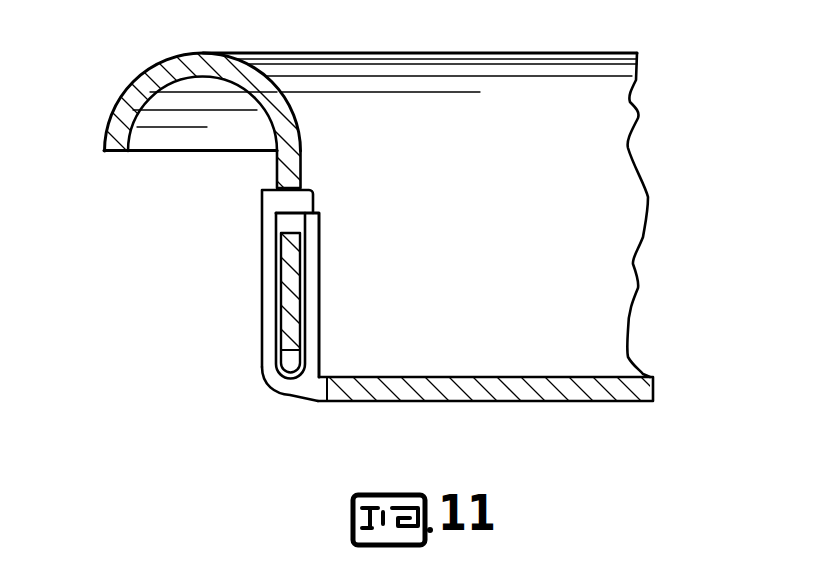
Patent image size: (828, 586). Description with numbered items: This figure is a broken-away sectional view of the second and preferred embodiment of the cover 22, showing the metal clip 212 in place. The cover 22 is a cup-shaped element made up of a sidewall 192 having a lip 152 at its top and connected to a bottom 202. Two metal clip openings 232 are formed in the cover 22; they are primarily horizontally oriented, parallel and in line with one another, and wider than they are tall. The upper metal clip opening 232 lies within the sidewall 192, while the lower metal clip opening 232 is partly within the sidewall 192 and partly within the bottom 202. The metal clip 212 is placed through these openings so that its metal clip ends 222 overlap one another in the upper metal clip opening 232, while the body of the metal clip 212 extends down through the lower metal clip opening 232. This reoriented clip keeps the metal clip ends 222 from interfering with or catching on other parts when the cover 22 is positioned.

The cover 22 is at (221, 432).
The lip 152 is at (213, 78).
The sidewall 192 is at (537, 278).
The bottom 202 is at (560, 401).
The metal clip 212 is at (262, 325).
The metal clip ends 222 is at (293, 205).
The metal clip openings 232 is at (281, 184).